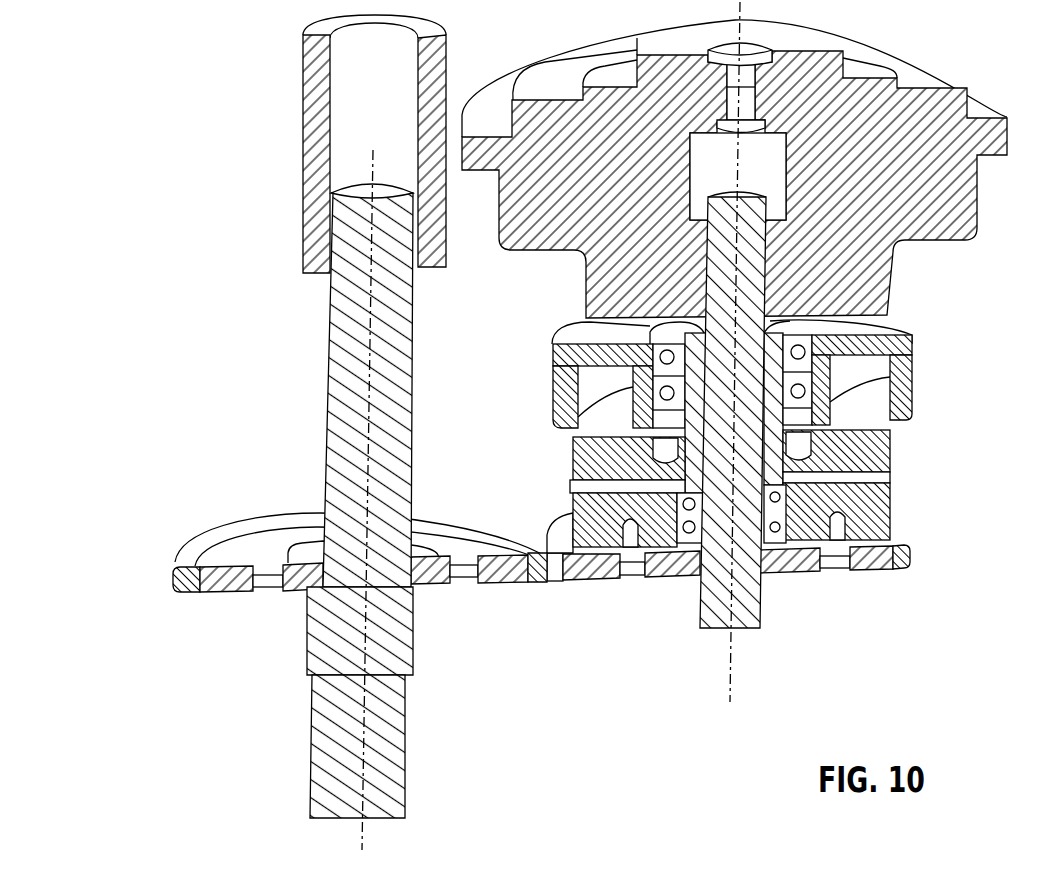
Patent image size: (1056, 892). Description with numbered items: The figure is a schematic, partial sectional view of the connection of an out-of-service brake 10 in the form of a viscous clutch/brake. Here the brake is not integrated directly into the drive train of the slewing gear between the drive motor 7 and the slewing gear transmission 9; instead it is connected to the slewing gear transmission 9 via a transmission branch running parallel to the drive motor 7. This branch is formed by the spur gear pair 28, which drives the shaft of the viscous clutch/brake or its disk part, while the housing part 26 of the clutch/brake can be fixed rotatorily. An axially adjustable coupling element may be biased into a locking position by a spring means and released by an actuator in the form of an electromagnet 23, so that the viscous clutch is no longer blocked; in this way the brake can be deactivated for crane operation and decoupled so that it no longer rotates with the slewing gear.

The drive motor 7 is at (299, 85).
The slewing gear transmission 9 is at (208, 502).
The out-of-service brake 10 is at (1012, 106).
The electromagnet 23 is at (873, 378).
The housing part 26 is at (836, 58).
The spur gear pair 28 is at (550, 590).